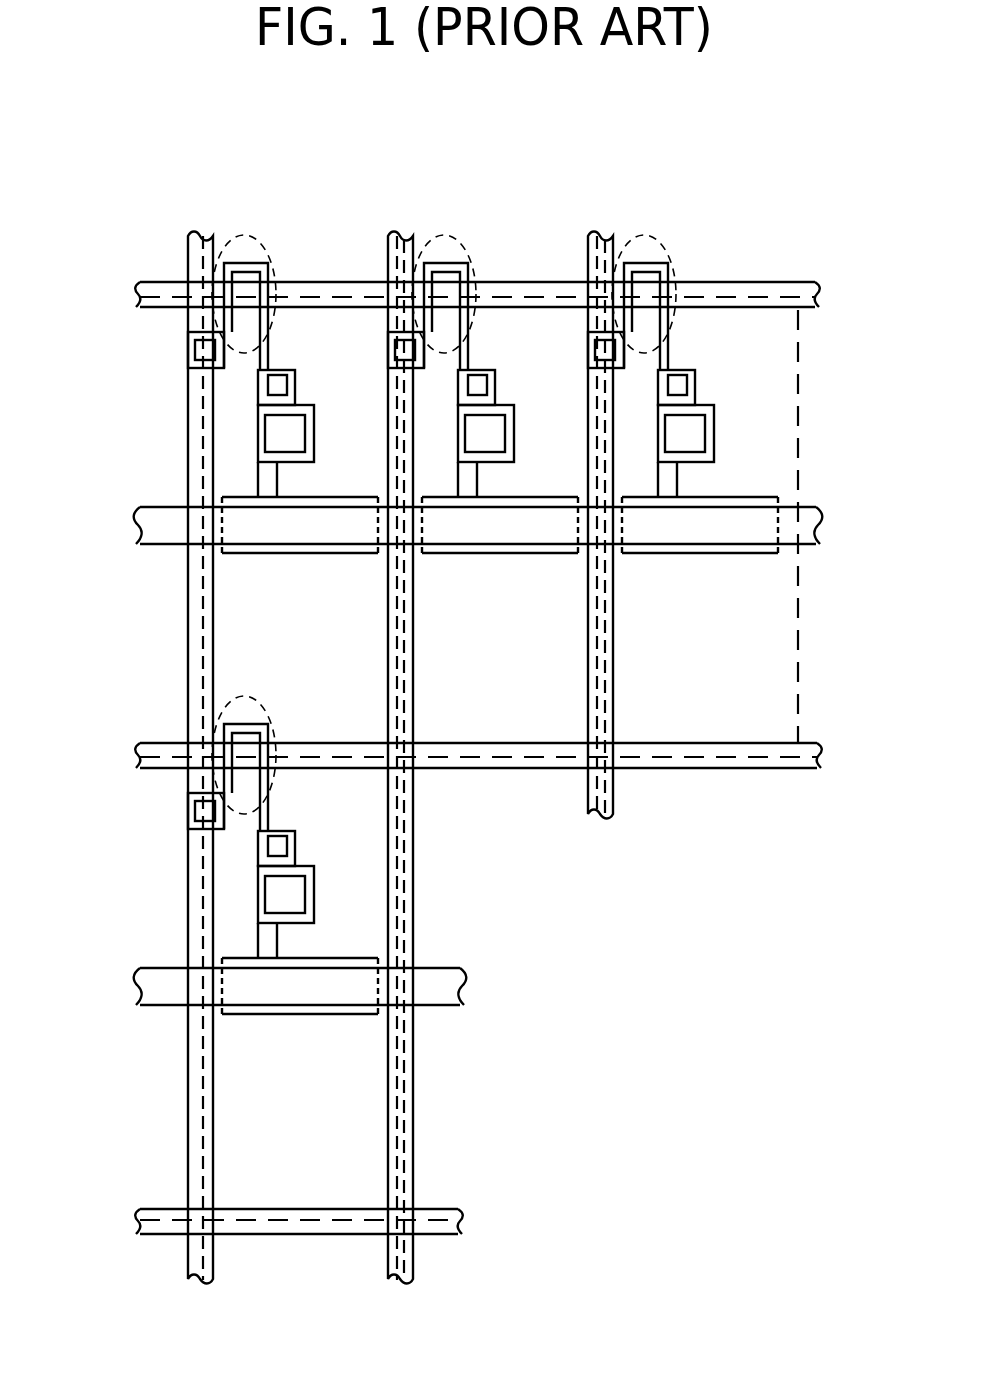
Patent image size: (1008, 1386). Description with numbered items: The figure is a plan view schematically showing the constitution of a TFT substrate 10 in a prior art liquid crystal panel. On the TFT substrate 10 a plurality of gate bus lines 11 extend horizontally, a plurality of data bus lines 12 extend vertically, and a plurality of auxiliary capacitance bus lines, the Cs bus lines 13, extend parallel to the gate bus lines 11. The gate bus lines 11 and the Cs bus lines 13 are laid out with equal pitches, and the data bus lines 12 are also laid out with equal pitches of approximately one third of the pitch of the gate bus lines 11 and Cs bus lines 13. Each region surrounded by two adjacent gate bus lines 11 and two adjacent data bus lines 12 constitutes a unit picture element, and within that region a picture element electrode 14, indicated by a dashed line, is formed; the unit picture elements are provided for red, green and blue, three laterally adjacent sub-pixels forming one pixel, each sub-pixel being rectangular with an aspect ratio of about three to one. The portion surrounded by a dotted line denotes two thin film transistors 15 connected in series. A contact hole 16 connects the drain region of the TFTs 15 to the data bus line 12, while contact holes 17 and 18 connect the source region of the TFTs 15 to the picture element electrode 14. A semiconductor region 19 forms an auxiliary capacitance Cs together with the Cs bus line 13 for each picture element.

The TFT substrate 10 is at (100, 182).
The gate bus line 11 is at (137, 291).
The data bus line 12 is at (202, 242).
The auxiliary capacitance (Cs) bus line 13 is at (158, 515).
The picture element electrode 14 is at (328, 289).
The thin film transistors 15 is at (265, 229).
The contact hole 16 is at (202, 352).
The contact hole 17 is at (277, 385).
The contact hole 18 is at (297, 435).
The semiconductor region 19 is at (500, 755).
The auxiliary capacitance Cs is at (243, 555).